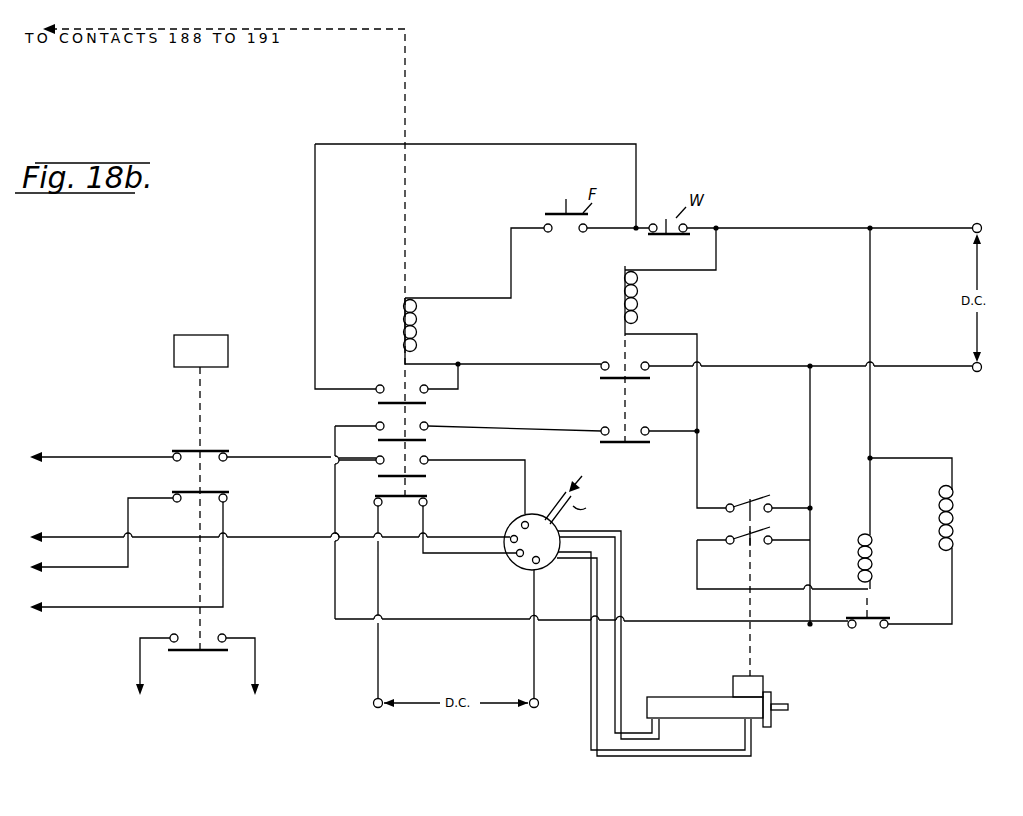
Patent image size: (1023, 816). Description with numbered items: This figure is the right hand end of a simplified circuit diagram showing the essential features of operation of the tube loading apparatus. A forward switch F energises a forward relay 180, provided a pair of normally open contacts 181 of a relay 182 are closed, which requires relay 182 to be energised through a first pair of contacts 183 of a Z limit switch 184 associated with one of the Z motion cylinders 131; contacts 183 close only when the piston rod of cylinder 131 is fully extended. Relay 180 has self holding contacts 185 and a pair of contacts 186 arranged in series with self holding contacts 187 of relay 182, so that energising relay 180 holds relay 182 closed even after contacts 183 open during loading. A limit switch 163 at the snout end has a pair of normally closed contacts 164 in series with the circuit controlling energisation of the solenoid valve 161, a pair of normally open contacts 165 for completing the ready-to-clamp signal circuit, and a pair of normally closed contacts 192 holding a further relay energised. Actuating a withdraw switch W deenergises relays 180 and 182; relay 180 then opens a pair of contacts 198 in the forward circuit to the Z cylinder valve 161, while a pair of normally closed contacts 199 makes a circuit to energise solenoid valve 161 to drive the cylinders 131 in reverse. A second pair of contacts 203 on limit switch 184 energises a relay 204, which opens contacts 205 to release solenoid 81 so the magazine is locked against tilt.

The limit switch 163 is at (201, 495).
The normally closed contacts 164 is at (221, 451).
The normally closed contacts 192 is at (222, 493).
The normally open contacts 165 is at (206, 659).
The forward relay 180 is at (398, 330).
The self holding contacts 185 is at (392, 388).
The contacts 186 is at (420, 425).
The contacts 198 is at (376, 478).
The normally closed contacts 199 is at (389, 506).
The solenoid valve 161 is at (550, 569).
The relay 182 is at (620, 310).
The normally open contacts 181 is at (633, 368).
The self holding contacts 187 is at (632, 443).
The first pair of contacts 183 is at (753, 500).
The second pair of contacts 203 is at (757, 554).
The relay 204 is at (878, 570).
The solenoid 81 is at (940, 521).
The contacts 205 is at (863, 635).
The Z motion cylinder 131 is at (697, 697).
The Z limit switch 184 is at (758, 684).